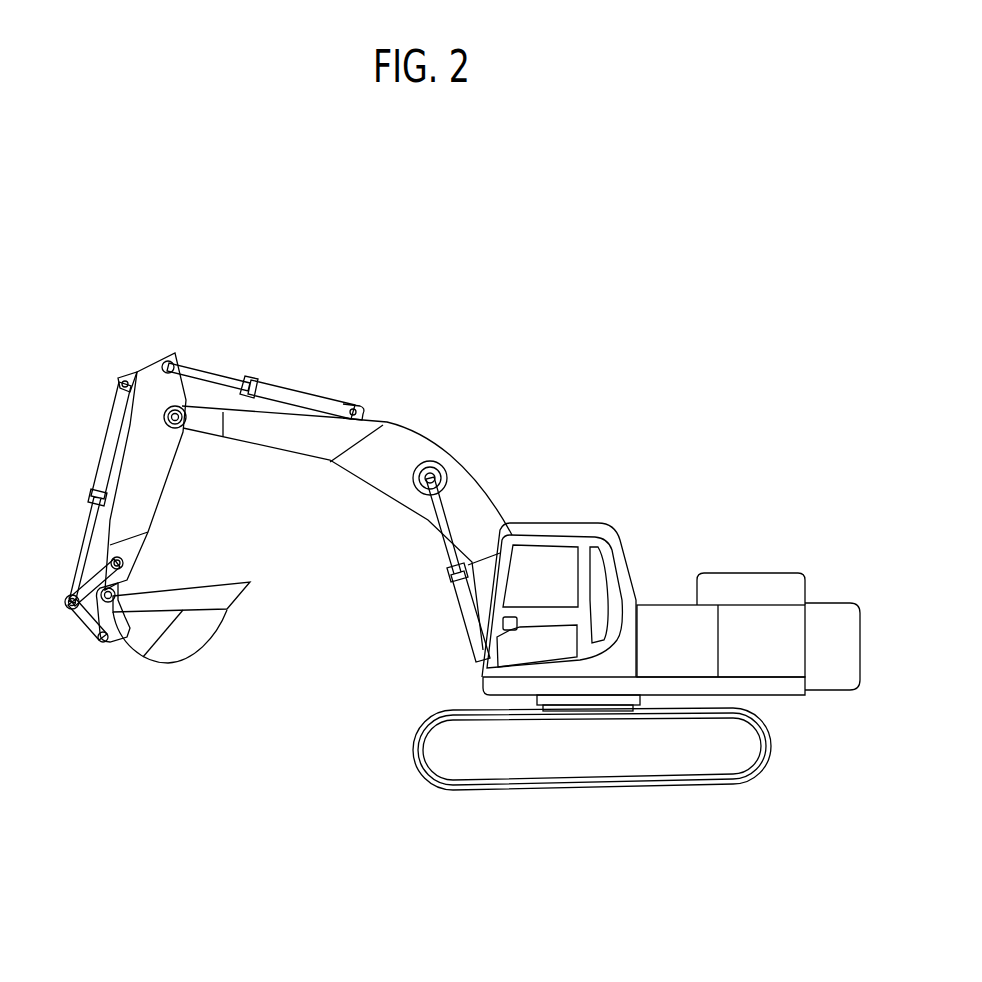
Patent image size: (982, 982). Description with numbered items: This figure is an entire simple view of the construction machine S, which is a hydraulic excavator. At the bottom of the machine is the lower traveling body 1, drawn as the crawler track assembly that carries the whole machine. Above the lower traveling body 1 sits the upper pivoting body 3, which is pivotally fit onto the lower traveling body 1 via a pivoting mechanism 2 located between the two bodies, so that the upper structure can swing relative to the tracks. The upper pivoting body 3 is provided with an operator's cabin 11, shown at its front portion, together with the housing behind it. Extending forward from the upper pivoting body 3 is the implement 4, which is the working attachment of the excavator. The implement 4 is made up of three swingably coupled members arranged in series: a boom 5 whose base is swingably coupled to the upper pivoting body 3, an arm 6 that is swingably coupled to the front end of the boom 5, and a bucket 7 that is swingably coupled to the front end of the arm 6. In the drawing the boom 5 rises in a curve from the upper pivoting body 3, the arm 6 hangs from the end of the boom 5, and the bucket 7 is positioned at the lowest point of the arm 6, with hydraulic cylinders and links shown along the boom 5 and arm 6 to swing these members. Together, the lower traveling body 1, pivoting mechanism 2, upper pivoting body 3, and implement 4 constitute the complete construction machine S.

The construction machine S is at (636, 466).
The lower traveling body 1 is at (582, 792).
The pivoting mechanism 2 is at (618, 703).
The upper pivoting body 3 is at (662, 601).
The implement 4 is at (145, 348).
The boom 5 is at (373, 470).
The arm 6 is at (143, 485).
The bucket 7 is at (187, 638).
The operator's cabin 11 is at (543, 521).